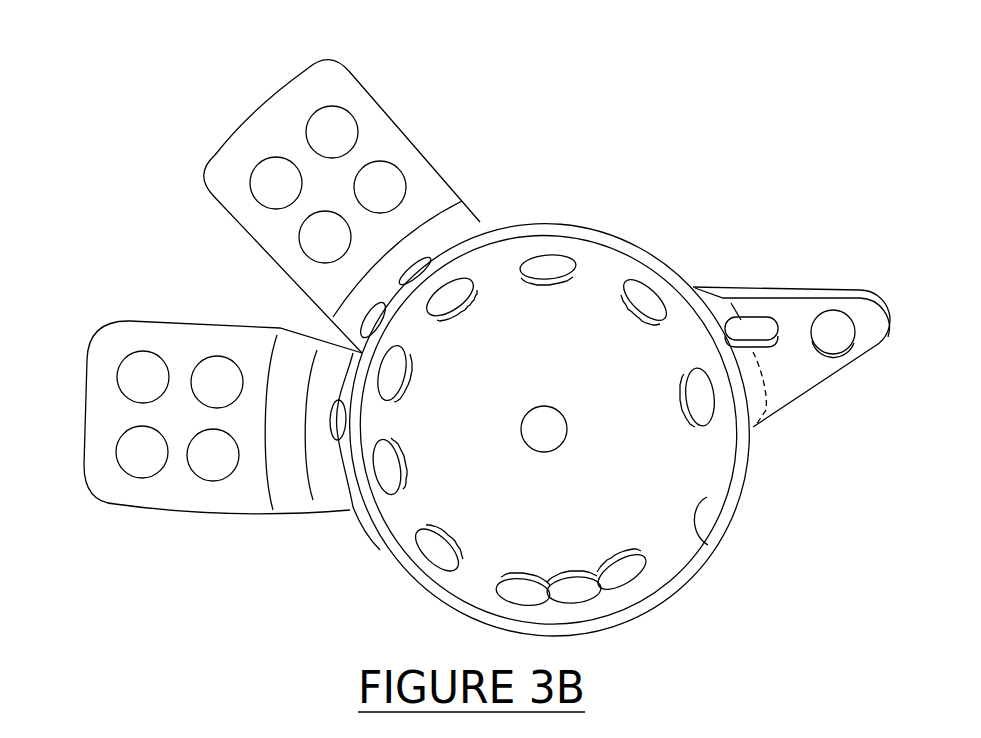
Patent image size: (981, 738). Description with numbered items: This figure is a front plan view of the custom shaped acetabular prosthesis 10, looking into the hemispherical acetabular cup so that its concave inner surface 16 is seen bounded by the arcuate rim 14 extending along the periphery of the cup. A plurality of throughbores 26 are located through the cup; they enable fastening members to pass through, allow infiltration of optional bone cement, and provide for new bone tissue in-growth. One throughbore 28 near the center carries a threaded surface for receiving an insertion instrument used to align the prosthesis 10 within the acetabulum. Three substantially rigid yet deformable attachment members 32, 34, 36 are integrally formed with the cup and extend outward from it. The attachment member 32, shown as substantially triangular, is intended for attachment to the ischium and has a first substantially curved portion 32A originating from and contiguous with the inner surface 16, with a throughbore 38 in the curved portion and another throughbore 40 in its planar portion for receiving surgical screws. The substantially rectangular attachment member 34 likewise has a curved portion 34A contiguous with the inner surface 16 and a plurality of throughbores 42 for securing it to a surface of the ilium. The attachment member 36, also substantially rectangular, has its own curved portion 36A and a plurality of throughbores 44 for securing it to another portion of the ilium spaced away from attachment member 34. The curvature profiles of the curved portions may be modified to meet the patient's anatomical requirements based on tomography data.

The acetabular prosthesis 10 is at (647, 190).
The rim 14 is at (510, 230).
The inner surface 16 is at (712, 548).
The throughbores 26 is at (623, 312).
The throughbore 28 is at (556, 404).
The attachment member 32 is at (815, 339).
The first substantially curved portion 32A is at (762, 424).
The attachment member 34 is at (352, 184).
The first substantially curved portion 34A is at (497, 232).
The attachment member 36 is at (197, 428).
The first substantially curved portion 36A is at (333, 490).
The throughbore 38 is at (772, 317).
The throughbore 40 is at (841, 354).
The throughbores 42 is at (356, 117).
The throughbores 44 is at (213, 360).